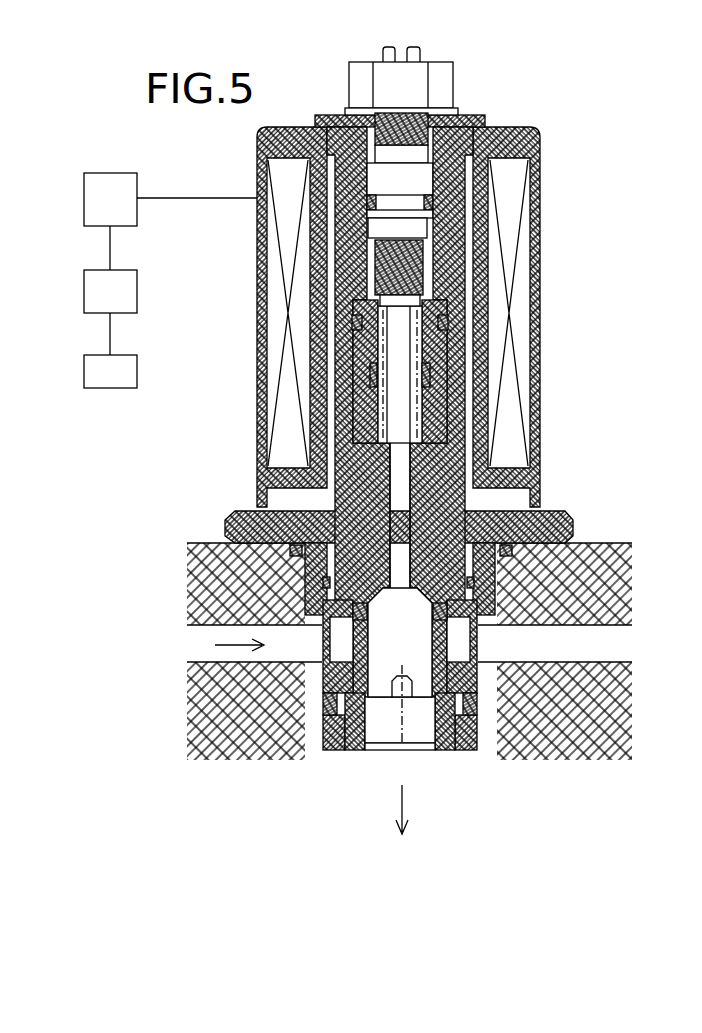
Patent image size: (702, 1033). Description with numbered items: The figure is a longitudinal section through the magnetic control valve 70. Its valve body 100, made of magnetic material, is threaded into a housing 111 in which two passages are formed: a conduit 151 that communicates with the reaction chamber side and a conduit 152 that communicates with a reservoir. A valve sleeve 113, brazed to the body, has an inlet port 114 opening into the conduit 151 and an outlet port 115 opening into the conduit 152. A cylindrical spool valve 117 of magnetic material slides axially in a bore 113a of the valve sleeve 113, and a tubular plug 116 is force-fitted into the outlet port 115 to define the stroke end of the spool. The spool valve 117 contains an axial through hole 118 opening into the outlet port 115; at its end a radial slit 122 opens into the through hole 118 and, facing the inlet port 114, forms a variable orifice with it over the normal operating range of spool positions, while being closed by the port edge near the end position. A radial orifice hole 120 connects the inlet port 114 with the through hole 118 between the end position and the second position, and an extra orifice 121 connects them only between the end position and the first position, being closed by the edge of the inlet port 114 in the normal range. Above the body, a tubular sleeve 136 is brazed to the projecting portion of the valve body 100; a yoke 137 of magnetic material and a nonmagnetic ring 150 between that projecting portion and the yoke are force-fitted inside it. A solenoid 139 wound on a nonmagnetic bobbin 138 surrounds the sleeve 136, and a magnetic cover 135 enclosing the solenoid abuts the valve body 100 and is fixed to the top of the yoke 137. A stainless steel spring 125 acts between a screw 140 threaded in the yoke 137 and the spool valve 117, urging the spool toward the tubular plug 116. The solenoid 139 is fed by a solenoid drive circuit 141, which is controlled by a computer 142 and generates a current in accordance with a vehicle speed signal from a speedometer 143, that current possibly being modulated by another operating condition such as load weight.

The magnetic control valve 70 is at (543, 95).
The valve body 100 is at (557, 517).
The housing 111 is at (207, 553).
The valve sleeve 113 is at (258, 508).
The bore 113a is at (365, 578).
The inlet port 114 is at (332, 648).
The outlet port 115 is at (410, 733).
The tubular plug 116 is at (450, 752).
The spool valve 117 is at (430, 470).
The through hole 118 is at (418, 658).
The orifice hole 120 is at (360, 643).
The extra orifice 121 is at (363, 613).
The slit 122 is at (400, 688).
The spring 125 is at (465, 348).
The cover 135 is at (257, 172).
The tubular sleeve 136 is at (468, 400).
The yoke 137 is at (467, 225).
The bobbin 138 is at (528, 137).
The solenoid 139 is at (270, 243).
The screw 140 is at (380, 272).
The solenoid drive circuit 141 is at (103, 180).
The computer 142 is at (128, 303).
The speedometer 143 is at (128, 378).
The ring 150 is at (335, 408).
The conduit 151 is at (195, 655).
The conduit 152 is at (350, 760).